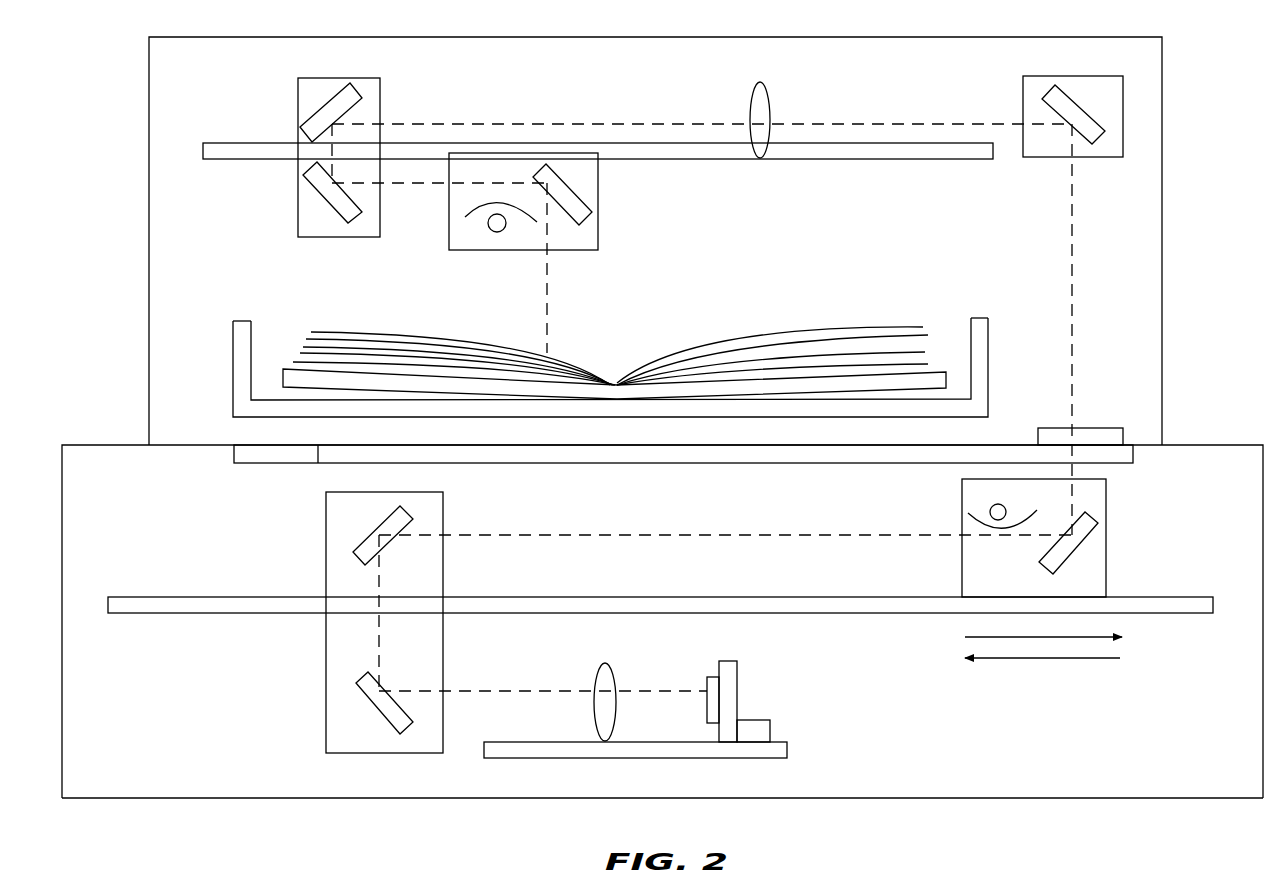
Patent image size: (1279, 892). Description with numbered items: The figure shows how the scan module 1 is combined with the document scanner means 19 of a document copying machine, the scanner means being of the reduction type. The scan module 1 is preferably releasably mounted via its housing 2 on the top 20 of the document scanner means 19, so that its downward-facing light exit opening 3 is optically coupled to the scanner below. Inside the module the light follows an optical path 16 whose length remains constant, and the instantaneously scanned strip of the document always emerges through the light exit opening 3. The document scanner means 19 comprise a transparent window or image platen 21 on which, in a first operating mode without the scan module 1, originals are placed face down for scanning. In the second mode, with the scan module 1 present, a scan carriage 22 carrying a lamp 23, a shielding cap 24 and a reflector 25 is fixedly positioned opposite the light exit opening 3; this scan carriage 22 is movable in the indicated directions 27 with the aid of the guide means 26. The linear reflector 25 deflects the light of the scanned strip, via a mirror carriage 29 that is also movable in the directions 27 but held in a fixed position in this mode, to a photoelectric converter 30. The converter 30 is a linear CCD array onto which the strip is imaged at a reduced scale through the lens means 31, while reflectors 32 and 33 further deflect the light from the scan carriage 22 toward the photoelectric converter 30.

The scan module 1 is at (1147, 220).
The housing 2 is at (1163, 285).
The light exit opening 3 is at (1085, 425).
The optical path 16 is at (1073, 252).
The document scanner means 19 is at (1005, 765).
The top 20 is at (1213, 440).
The image platen 21 is at (745, 452).
The scan carriage 22 is at (1106, 485).
The lamp 23 is at (990, 507).
The shielding cap 24 is at (977, 520).
The reflector 25 is at (1088, 535).
The guide means 26 is at (753, 613).
The directions 27 is at (1037, 660).
The mirror carriage 29 is at (338, 672).
The photoelectric converter 30 is at (715, 725).
The lens means 31 is at (607, 705).
The reflector 32 is at (375, 708).
The reflector 33 is at (355, 555).